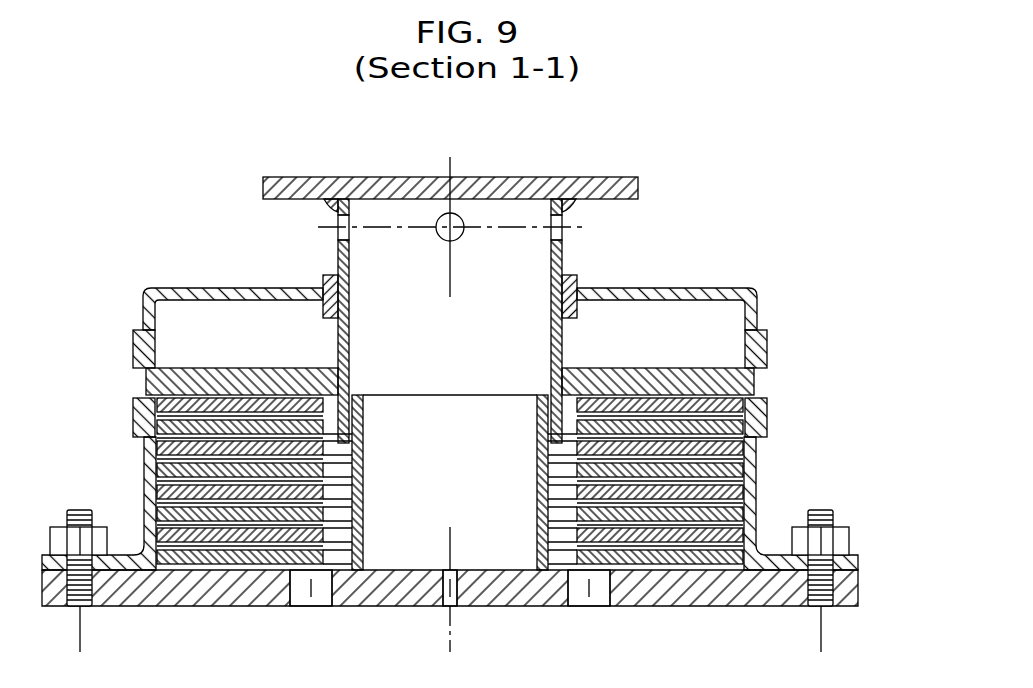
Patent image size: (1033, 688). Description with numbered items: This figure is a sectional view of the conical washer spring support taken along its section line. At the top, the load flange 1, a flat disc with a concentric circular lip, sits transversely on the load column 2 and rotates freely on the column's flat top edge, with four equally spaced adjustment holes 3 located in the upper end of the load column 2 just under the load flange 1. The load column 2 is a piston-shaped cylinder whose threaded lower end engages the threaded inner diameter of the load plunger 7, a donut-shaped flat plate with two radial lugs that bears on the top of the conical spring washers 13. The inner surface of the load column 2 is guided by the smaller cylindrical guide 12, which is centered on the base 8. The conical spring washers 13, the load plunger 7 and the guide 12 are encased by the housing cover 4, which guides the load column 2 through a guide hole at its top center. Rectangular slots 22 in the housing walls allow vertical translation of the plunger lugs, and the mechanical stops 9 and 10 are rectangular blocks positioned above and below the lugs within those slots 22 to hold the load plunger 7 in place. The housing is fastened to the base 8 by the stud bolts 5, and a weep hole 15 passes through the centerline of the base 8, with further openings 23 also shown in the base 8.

The load flange 1 is at (631, 177).
The load column 2 is at (338, 255).
The adjustment holes 3 is at (437, 231).
The housing cover 4 is at (681, 288).
The retaining stud bolts 5 is at (835, 520).
The load plunger 7 is at (217, 368).
The base 8 is at (858, 585).
The mechanical stop 9 is at (757, 369).
The mechanical stop 10 is at (767, 417).
The guide 12 is at (537, 470).
The conical spring washers 13 is at (580, 495).
The weep hole 15 is at (446, 607).
The rectangular slots 22 is at (143, 328).
The square hole 23 is at (290, 607).